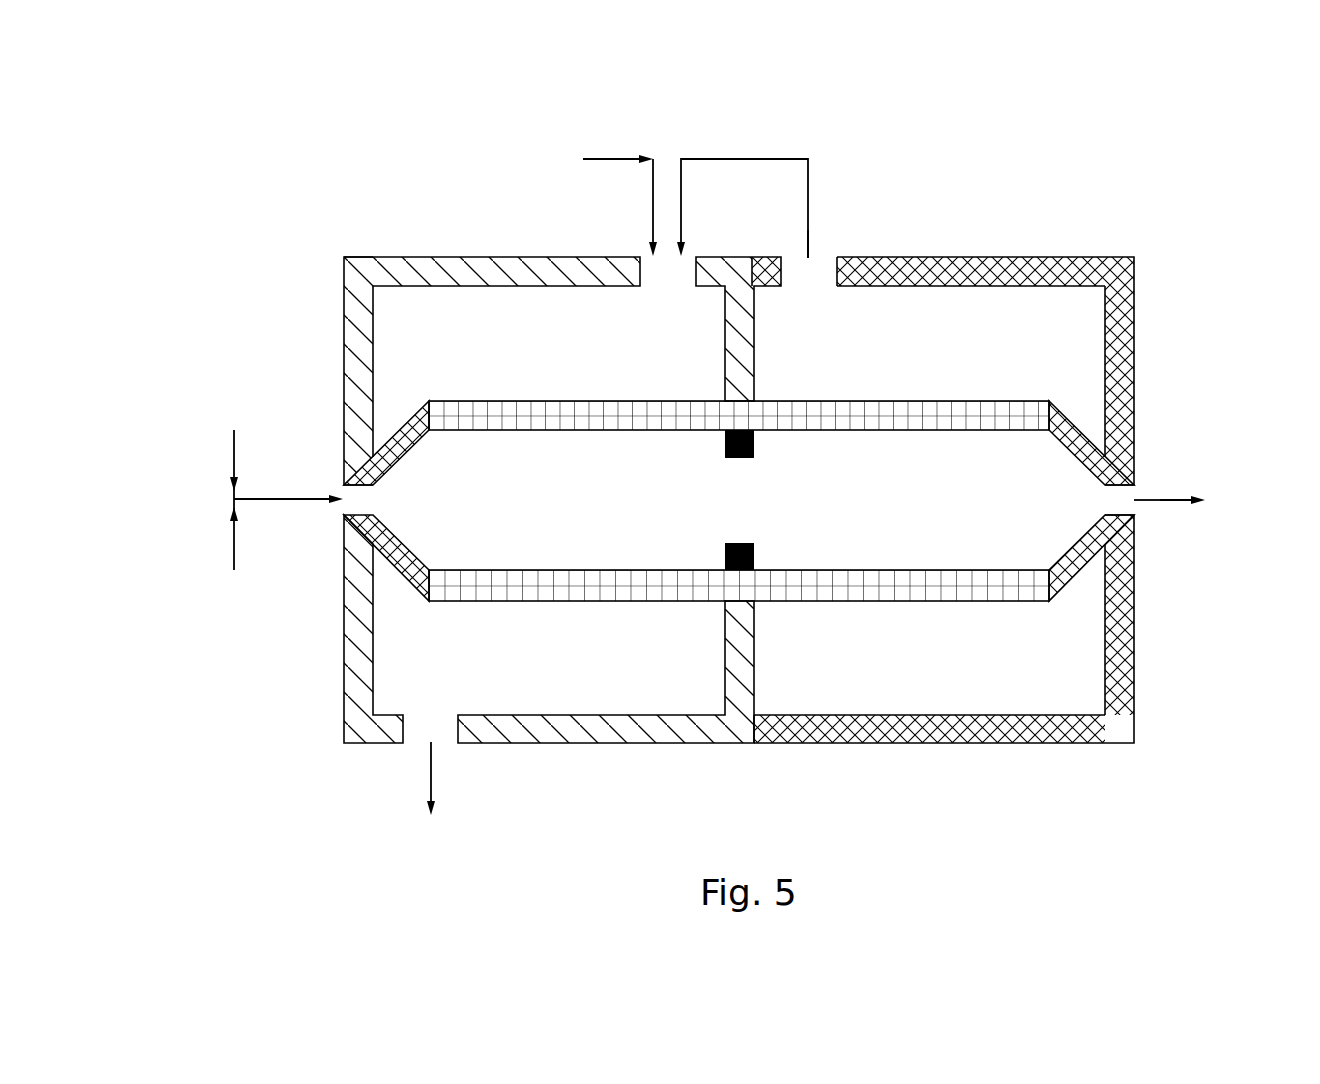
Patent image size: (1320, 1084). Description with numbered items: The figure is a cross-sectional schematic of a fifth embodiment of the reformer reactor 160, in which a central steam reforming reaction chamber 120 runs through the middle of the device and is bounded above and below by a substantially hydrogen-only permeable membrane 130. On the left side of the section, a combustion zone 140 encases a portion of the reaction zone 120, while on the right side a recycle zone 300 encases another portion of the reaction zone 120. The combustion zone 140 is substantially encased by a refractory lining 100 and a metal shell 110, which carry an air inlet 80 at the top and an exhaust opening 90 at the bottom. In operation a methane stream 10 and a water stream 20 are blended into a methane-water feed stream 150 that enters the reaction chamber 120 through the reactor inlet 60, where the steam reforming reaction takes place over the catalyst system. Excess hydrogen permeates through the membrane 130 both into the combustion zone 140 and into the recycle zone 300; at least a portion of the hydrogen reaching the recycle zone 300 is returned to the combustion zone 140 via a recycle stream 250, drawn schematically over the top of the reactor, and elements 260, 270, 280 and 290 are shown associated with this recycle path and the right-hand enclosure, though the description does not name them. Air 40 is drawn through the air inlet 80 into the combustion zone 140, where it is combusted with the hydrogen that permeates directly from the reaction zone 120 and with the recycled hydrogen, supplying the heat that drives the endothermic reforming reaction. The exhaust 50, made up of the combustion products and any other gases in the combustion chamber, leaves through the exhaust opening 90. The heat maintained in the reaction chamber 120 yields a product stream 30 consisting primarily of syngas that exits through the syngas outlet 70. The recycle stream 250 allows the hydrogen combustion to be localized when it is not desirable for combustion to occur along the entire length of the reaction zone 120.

The methane stream 10 is at (234, 445).
The water stream 20 is at (234, 543).
The product stream 30 is at (1157, 502).
The air 40 is at (595, 159).
The exhaust 50 is at (431, 775).
The reactor inlet 60 is at (343, 493).
The syngas outlet 70 is at (1127, 495).
The air inlet 80 is at (645, 257).
The exhaust opening 90 is at (443, 740).
The refractory lining 100 is at (427, 257).
The metal shell 110 is at (478, 257).
The steam reforming reaction chamber 120 is at (867, 514).
The hydrogen permeable membrane 130 is at (607, 413).
The combustion zone 140 is at (580, 350).
The methane-water feed stream 150 is at (303, 502).
The reformer reactor 160 is at (893, 830).
The recycle stream 250 is at (773, 159).
The feed line 260 is at (653, 190).
The opening 270 is at (822, 258).
The second housing wall 280 is at (930, 257).
The second housing wall 290 is at (1033, 257).
The recycle zone 300 is at (1013, 350).